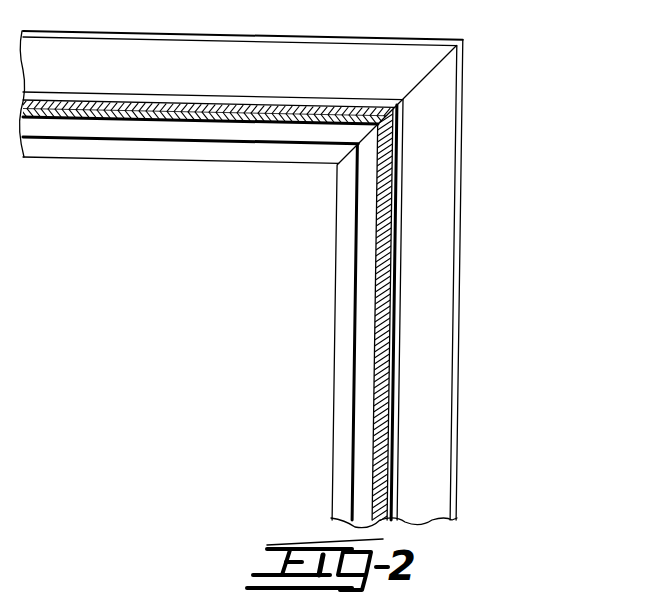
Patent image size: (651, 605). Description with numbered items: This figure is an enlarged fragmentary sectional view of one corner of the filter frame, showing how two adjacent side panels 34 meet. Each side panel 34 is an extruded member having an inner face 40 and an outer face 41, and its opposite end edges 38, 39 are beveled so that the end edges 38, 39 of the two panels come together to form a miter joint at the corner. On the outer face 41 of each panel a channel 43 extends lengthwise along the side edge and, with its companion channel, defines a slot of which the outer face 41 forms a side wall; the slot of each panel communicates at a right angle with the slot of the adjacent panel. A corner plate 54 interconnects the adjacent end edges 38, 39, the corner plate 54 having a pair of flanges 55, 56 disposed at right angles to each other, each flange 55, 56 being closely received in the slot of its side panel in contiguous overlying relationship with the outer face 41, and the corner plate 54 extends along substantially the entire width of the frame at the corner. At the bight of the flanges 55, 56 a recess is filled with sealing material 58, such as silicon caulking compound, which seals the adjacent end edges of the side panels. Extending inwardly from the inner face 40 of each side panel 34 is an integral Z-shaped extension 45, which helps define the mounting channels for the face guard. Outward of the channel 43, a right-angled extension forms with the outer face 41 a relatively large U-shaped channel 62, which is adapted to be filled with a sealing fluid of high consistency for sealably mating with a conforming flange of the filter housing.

The side panel 34 is at (69, 138).
The end edge 38 is at (433, 70).
The end edge 39 is at (410, 90).
The inner face 40 is at (124, 122).
The outer face 41 is at (118, 104).
The channel 43 is at (21, 105).
The extension 45 is at (226, 156).
The corner plate 54 is at (283, 88).
The flange 55 is at (198, 100).
The flange 56 is at (399, 375).
The sealing material 58 is at (392, 117).
The U-shaped channel 62 is at (85, 50).